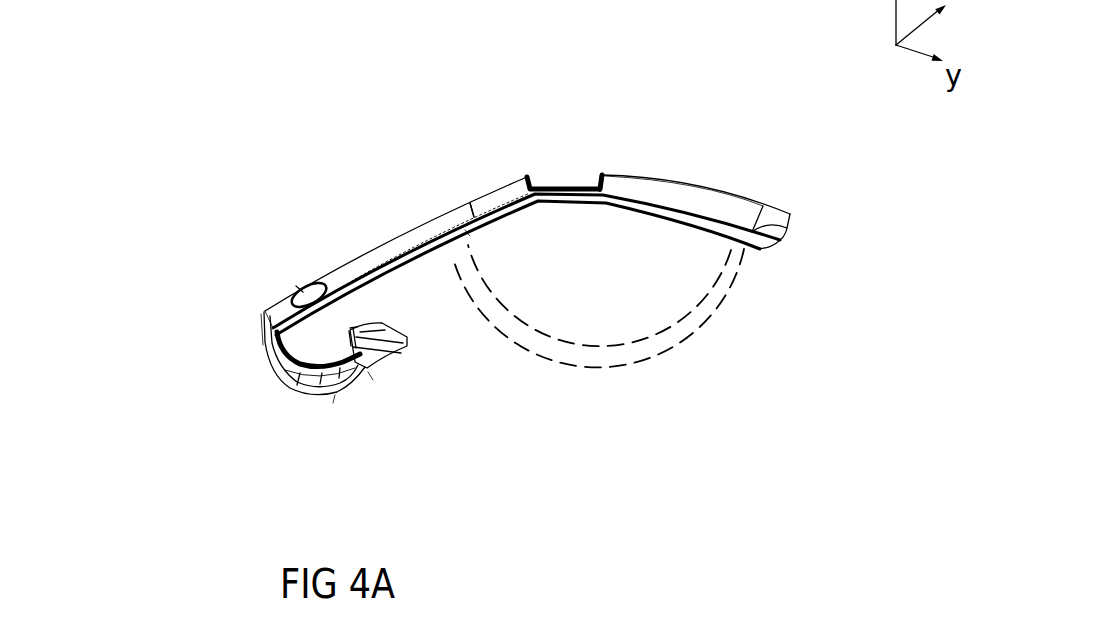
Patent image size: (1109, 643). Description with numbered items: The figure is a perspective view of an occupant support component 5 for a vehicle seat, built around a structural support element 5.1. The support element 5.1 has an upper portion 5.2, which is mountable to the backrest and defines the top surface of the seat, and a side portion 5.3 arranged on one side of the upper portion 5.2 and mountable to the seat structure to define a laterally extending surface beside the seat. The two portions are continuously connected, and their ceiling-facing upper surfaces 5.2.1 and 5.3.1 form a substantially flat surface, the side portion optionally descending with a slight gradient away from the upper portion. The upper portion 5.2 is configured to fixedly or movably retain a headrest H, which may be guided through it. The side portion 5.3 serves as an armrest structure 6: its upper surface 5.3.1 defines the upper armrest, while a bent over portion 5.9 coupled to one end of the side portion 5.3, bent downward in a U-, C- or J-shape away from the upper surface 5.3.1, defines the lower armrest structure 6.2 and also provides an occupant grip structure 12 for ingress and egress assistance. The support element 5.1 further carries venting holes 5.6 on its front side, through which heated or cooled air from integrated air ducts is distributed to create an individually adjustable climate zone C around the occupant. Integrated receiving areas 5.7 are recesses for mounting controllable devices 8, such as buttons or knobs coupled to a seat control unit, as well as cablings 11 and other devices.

The occupant support component 5 is at (627, 80).
The structural support element 5.1 is at (486, 172).
The upper portion 5.2 is at (740, 214).
The upper surface of the upper portion 5.2.1 is at (698, 200).
The side portion 5.3 is at (398, 245).
The upper surface of the side portion 5.3.1 is at (447, 218).
The venting holes 5.6 is at (787, 230).
The receiving areas 5.7 is at (326, 292).
The bent over portion 5.9 is at (265, 352).
The armrest structure 6 is at (362, 220).
The lower armrest structure 6.2 is at (410, 355).
The controllable devices 8 is at (301, 284).
The cablings 11 is at (401, 324).
The occupant grip structure 12 is at (234, 288).
The headrest H is at (555, 168).
The climate zone C is at (674, 330).